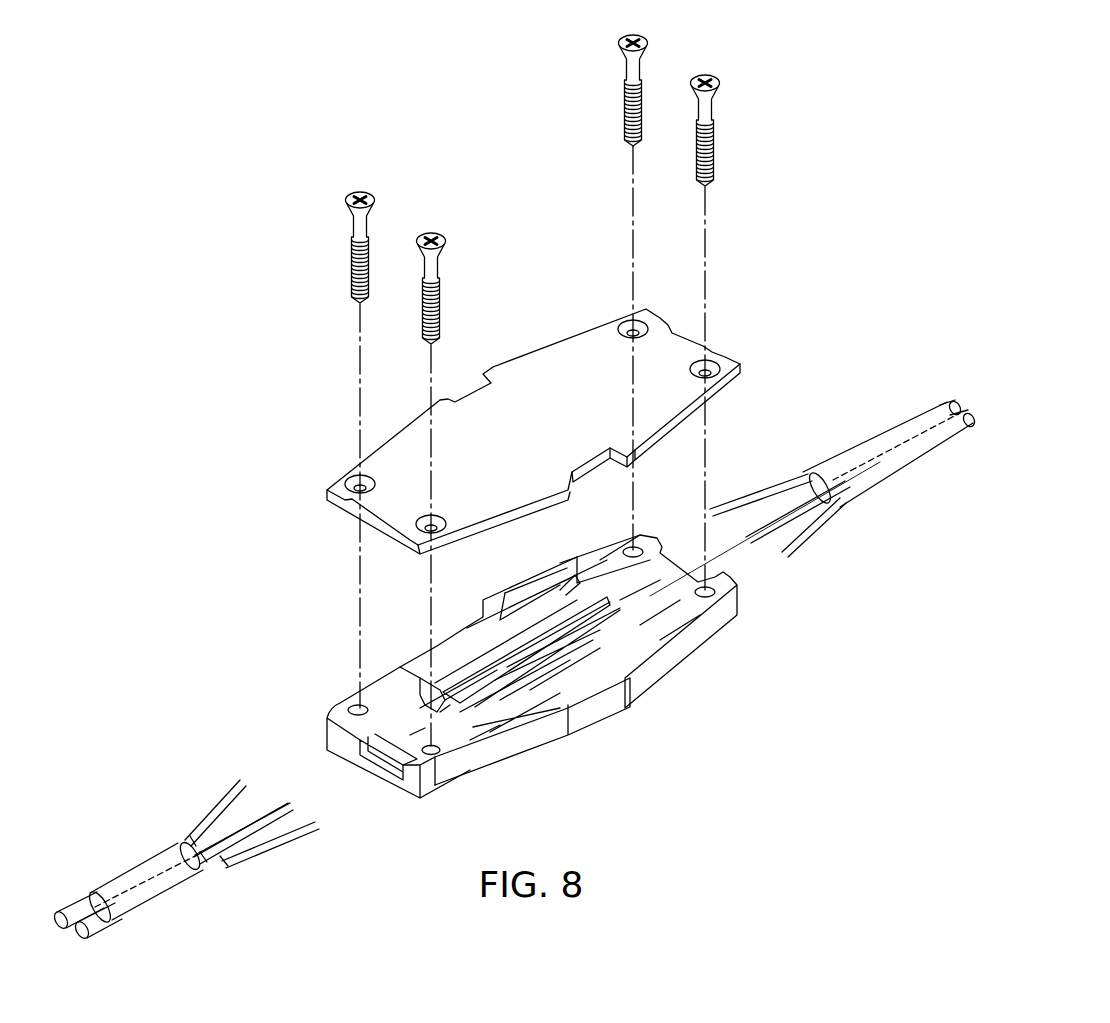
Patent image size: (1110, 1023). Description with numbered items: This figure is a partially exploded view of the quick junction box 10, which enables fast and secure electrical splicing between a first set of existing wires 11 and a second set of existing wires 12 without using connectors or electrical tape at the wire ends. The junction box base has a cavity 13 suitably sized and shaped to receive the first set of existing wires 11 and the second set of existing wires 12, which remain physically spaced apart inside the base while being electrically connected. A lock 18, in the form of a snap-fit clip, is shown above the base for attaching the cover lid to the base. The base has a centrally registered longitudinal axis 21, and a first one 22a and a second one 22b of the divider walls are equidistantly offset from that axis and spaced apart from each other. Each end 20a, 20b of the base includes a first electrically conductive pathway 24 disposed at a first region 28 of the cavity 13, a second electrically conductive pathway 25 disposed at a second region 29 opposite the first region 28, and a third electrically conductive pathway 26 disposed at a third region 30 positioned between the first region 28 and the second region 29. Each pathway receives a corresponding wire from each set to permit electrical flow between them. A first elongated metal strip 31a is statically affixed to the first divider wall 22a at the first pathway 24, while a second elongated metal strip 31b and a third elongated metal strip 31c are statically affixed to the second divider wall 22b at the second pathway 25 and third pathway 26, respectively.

The quick junction box 10 is at (345, 131).
The first set of existing wires 11 is at (170, 828).
The second set of existing wires 12 is at (872, 462).
The cavity 13 is at (392, 730).
The lock 18 is at (595, 477).
The end of the junction box base 20a is at (363, 770).
The end of the junction box base 20b is at (723, 570).
The centrally registered longitudinal axis 21 is at (362, 773).
The first one of the divider walls 22a is at (517, 637).
The second one of the divider walls 22b is at (562, 662).
The first electrically conductive pathway 24 is at (560, 587).
The second electrically conductive pathway 25 is at (487, 715).
The third electrically conductive pathway 26 is at (627, 600).
The first region of the cavity 28 is at (607, 545).
The second region of the cavity 29 is at (478, 738).
The third region of the cavity 30 is at (652, 618).
The first elongated metal strip 31a is at (501, 578).
The second elongated metal strip 31b is at (552, 677).
The third elongated metal strip 31c is at (525, 667).